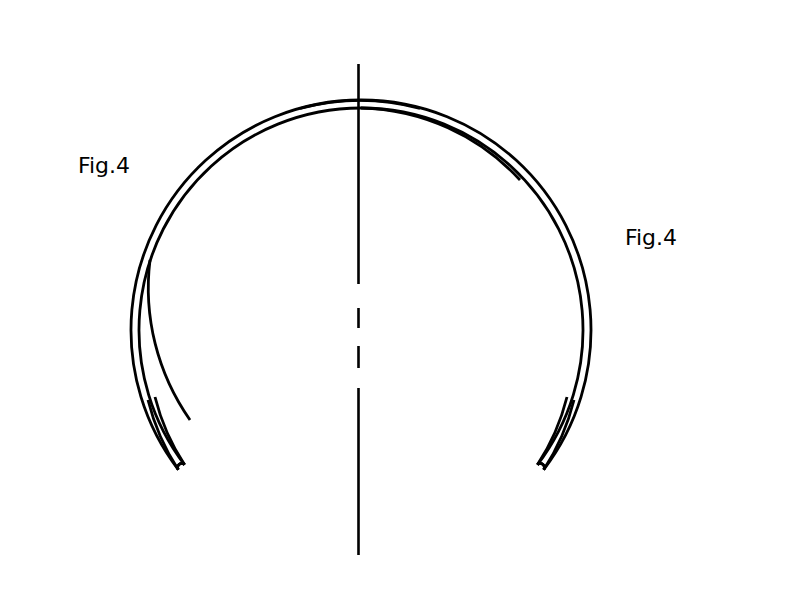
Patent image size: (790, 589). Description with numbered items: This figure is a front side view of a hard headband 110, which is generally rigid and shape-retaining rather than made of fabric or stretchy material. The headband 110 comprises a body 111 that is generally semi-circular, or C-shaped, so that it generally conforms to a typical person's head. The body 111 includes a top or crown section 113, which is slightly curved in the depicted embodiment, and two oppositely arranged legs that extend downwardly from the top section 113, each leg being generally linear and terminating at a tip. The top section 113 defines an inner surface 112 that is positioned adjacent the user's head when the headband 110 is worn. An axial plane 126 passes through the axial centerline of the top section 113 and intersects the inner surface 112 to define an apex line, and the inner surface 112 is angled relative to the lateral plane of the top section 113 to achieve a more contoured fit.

The headband 110 is at (256, 118).
The body 111 is at (143, 323).
The inner surface 112 is at (408, 115).
The top section 113 is at (317, 100).
The axial plane 126 is at (359, 92).